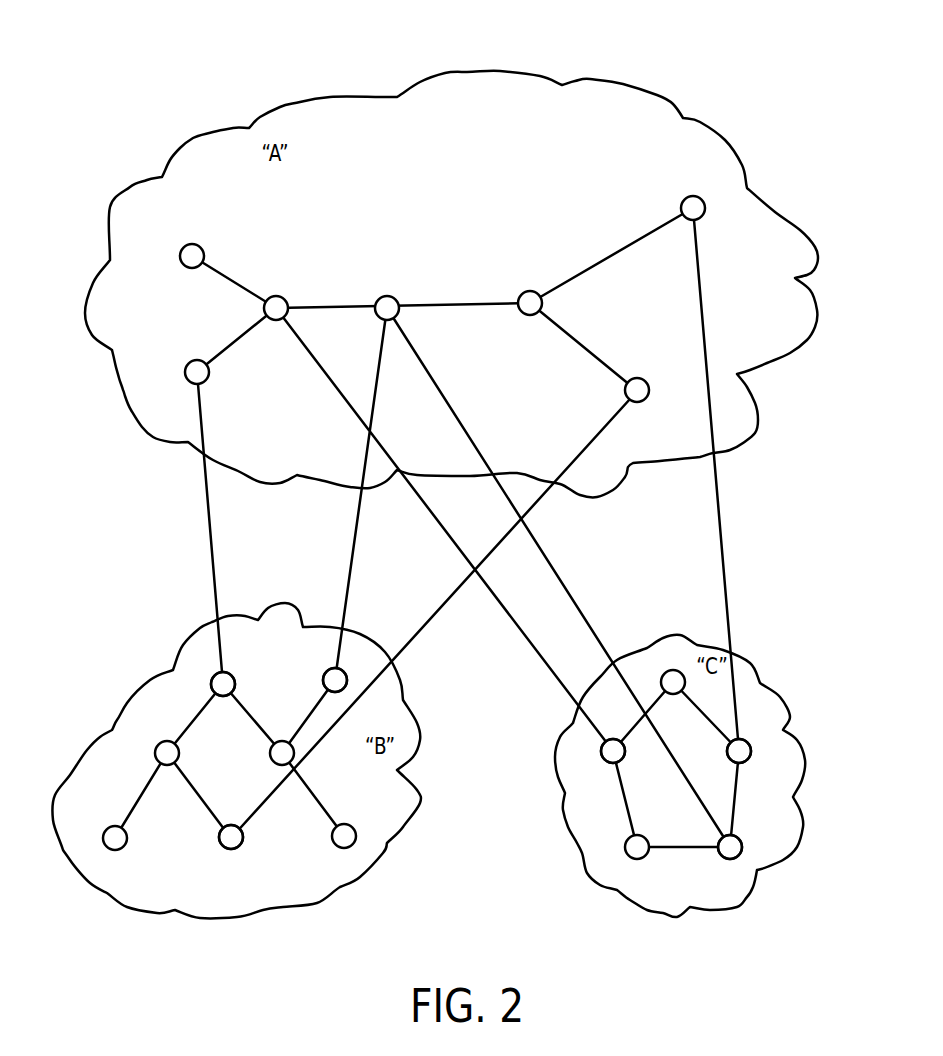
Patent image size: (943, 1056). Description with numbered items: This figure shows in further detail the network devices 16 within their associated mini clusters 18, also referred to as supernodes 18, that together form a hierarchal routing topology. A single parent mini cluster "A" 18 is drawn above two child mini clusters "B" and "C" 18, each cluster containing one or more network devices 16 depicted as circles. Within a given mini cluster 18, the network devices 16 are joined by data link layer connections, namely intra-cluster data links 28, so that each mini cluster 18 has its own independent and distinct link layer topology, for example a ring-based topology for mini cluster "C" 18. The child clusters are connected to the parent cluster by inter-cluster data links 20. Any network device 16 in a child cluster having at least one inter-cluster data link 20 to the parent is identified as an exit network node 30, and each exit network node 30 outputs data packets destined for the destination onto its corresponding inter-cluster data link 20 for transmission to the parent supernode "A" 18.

The network device 16 is at (439, 540).
The mini cluster 18 is at (435, 494).
The inter-cluster data link 20 is at (468, 527).
The intra-cluster data link 28 is at (414, 527).
The exit network node 30 is at (488, 766).